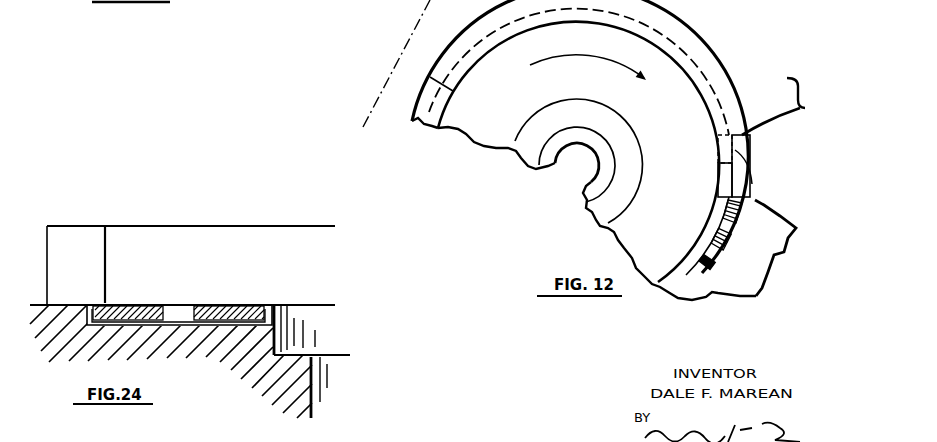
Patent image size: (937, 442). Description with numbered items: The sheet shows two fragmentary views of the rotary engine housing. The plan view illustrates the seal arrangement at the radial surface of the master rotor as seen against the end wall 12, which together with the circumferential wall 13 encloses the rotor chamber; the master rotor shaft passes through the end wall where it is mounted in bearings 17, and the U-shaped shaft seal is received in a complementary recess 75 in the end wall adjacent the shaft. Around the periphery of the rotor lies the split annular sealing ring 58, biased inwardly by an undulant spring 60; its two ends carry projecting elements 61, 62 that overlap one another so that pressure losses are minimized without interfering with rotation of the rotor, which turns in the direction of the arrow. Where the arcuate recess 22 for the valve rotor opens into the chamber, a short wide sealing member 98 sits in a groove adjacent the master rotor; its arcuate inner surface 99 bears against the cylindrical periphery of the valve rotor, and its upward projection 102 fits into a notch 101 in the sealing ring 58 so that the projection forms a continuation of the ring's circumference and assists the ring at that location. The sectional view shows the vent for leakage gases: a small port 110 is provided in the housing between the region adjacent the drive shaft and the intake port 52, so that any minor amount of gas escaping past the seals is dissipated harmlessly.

In FIG. 24, the end wall 12 is at (150, 343).
In FIG. 12, the circumferential wall 13 is at (444, 16).
In FIG. 24, the circumferential wall 13 is at (237, 250).
In FIG. 12, the bearings 17 is at (592, 190).
In FIG. 12, the arcuate recess 22 is at (777, 221).
In FIG. 24, the intake port 52 is at (70, 258).
In FIG. 12, the sealing ring 58 is at (676, 44).
In FIG. 12, the undulant spring 60 is at (731, 238).
In FIG. 12, the projecting element 61 is at (448, 91).
In FIG. 12, the projecting element 62 is at (426, 86).
In FIG. 12, the recess 75 is at (529, 178).
In FIG. 24, the recess 75 is at (278, 323).
In FIG. 12, the sealing member 98 is at (716, 185).
In FIG. 12, the arcuate inner surface 99 is at (745, 140).
In FIG. 12, the notch 101 is at (752, 184).
In FIG. 12, the upward projection 102 is at (737, 157).
In FIG. 24, the port 110 is at (222, 305).